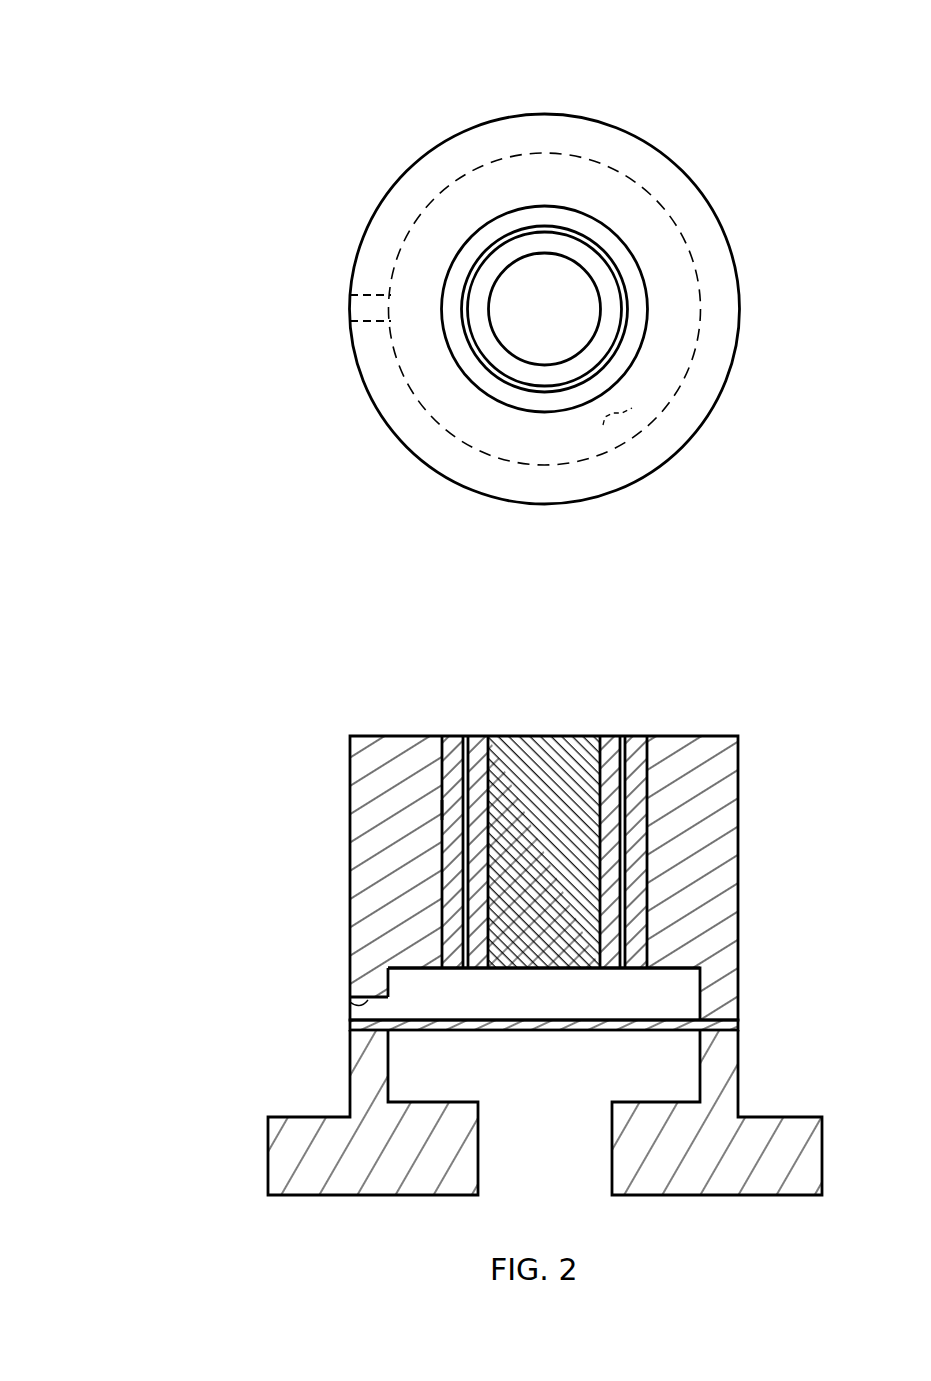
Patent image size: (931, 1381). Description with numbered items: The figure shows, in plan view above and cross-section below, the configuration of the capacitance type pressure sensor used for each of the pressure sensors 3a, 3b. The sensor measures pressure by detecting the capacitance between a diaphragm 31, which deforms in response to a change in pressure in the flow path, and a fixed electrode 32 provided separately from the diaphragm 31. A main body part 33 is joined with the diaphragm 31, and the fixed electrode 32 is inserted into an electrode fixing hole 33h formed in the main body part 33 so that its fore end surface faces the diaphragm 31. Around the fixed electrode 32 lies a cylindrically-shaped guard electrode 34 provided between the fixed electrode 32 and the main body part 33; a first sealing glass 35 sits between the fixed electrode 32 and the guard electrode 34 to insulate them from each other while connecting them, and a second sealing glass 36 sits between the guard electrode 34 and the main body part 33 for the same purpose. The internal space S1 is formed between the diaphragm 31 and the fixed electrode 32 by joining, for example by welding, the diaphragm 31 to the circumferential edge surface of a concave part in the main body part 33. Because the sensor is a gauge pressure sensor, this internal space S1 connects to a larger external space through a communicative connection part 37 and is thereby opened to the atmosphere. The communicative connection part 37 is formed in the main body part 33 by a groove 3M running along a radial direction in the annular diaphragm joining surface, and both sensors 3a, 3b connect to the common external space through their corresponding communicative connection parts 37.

The pressure sensor 3a is at (442, 600).
The pressure sensor 3b is at (373, 120).
The diaphragm 31 is at (543, 1030).
The fixed electrode 32 is at (600, 307).
The main body part 33 is at (373, 212).
The electrode fixing hole 33h is at (443, 810).
The guard electrode 34 is at (607, 253).
The first sealing glass 35 is at (578, 240).
The second sealing glass 36 is at (517, 207).
The communicative connection part 37 is at (348, 305).
The groove 3M is at (368, 327).
The internal space S1 is at (622, 413).